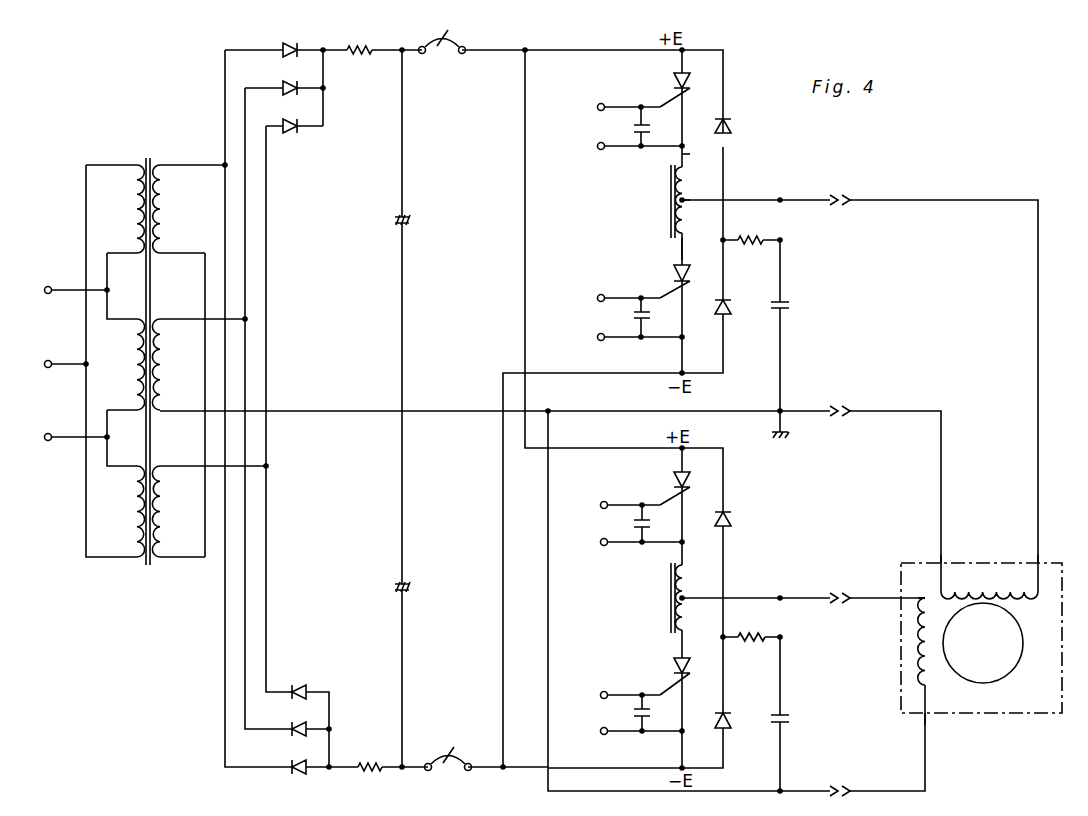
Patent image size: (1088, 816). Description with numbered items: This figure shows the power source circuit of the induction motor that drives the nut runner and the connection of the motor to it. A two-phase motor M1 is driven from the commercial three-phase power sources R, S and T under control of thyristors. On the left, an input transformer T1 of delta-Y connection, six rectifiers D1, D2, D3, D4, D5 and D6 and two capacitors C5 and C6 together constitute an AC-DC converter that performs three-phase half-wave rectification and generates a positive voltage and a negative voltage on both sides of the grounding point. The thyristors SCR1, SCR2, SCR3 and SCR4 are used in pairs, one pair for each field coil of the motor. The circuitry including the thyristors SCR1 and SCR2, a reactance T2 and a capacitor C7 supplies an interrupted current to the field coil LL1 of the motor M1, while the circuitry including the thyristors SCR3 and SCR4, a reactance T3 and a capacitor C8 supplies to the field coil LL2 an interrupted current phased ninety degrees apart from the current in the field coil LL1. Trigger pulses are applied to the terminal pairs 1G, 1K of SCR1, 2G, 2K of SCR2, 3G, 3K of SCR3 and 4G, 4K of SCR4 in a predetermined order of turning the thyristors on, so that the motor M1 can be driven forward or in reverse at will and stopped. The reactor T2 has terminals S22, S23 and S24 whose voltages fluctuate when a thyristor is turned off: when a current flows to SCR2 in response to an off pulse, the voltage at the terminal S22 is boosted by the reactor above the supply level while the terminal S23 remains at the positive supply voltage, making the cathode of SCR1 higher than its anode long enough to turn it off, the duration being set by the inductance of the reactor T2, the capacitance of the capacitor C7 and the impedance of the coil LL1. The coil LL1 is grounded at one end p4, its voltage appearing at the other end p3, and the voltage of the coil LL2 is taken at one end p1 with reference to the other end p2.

The input transformer T1 is at (176, 353).
The commercial power source phase R is at (66, 291).
The commercial power source phase S is at (56, 364).
The commercial power source phase T is at (66, 438).
The rectifier D1 is at (295, 39).
The rectifier D2 is at (295, 78).
The rectifier D3 is at (295, 116).
The rectifier D4 is at (300, 682).
The rectifier D5 is at (300, 719).
The rectifier D6 is at (300, 757).
The capacitor C5 is at (418, 221).
The capacitor C6 is at (418, 587).
The thyristor SCR1 is at (656, 90).
The thyristor SCR2 is at (656, 281).
The thyristor SCR3 is at (656, 488).
The thyristor SCR4 is at (654, 676).
The gate terminal of thyristor SCR1 1G is at (615, 107).
The cathode terminal of thyristor SCR1 1K is at (626, 146).
The gate terminal of thyristor SCR2 2G is at (615, 299).
The cathode terminal of thyristor SCR2 2K is at (626, 338).
The gate terminal of thyristor SCR3 3G is at (616, 507).
The cathode terminal of thyristor SCR3 3K is at (627, 544).
The gate terminal of thyristor SCR4 4G is at (616, 697).
The cathode terminal of thyristor SCR4 4K is at (627, 733).
The reactance T2 is at (663, 201).
The reactance T3 is at (663, 598).
The terminal of reactor T2 S22 is at (682, 154).
The terminal of reactor T2 S23 is at (688, 200).
The terminal of reactor T2 S24 is at (699, 250).
The capacitor C7 is at (793, 309).
The capacitor C8 is at (794, 721).
The two-phase motor M1 is at (981, 638).
The field coil LL1 is at (989, 585).
The field coil LL2 is at (906, 641).
The one end of coil LL2 p1 is at (901, 587).
The other end of coil LL2 p2 is at (912, 724).
The other end of coil LL1 p3 is at (1050, 552).
The one end of coil LL1 p4 is at (931, 552).